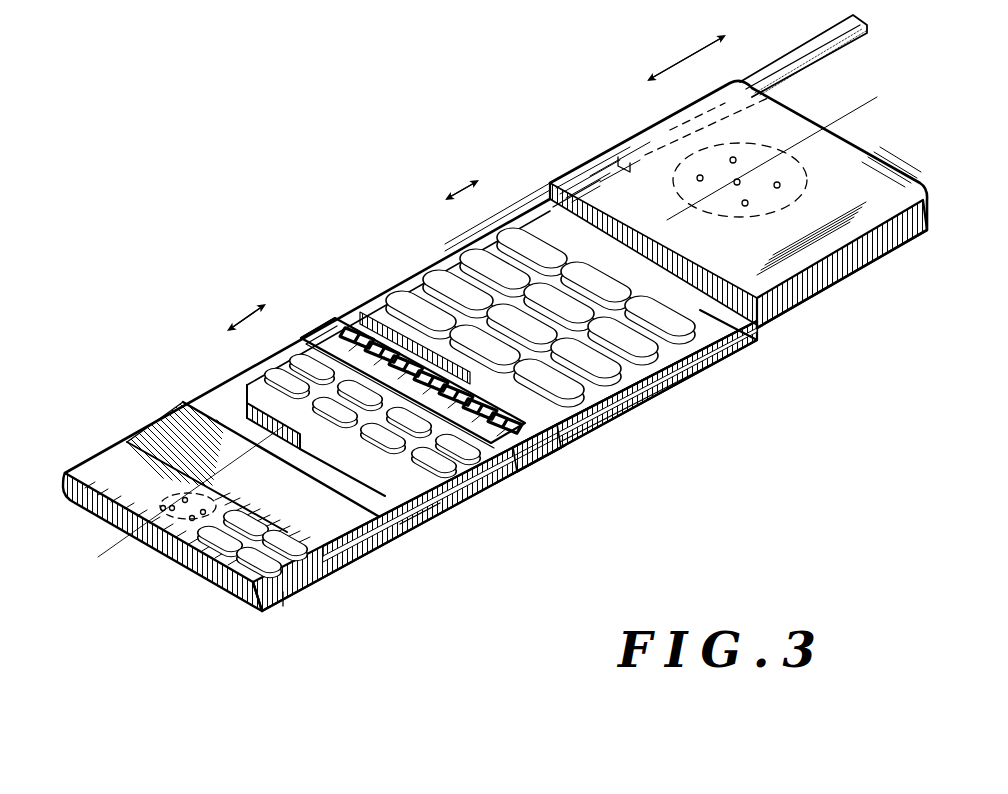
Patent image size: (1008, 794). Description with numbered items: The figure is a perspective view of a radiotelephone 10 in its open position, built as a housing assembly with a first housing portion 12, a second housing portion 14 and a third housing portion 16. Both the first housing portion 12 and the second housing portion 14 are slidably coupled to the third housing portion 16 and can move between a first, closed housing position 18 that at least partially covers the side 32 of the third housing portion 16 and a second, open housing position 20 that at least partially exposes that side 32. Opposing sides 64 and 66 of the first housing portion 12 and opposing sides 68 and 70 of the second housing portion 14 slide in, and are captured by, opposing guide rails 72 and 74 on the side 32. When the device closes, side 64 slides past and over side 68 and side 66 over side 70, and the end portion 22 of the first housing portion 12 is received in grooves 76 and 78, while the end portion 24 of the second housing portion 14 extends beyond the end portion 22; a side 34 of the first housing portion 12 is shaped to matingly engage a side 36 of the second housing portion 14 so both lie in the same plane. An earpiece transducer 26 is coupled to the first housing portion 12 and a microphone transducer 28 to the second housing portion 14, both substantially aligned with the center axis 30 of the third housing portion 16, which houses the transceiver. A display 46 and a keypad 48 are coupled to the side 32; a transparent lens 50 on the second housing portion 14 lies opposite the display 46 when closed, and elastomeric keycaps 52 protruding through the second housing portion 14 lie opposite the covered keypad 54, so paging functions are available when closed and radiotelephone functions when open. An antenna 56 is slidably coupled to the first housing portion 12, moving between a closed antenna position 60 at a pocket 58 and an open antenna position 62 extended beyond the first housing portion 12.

The radiotelephone 10 is at (680, 558).
The first housing portion 12 is at (787, 265).
The second housing portion 14 is at (64, 468).
The third housing portion 16 is at (590, 437).
The first housing position 18 is at (353, 256).
The second housing position 20 is at (350, 249).
The end portion 22 is at (487, 237).
The end portion 24 is at (340, 320).
The earpiece transducer 26 is at (747, 140).
The microphone transducer 28 is at (162, 503).
The center axis 30 is at (833, 127).
The side 32 is at (405, 285).
The side 34 is at (720, 293).
The side 36 is at (226, 424).
The display 46 is at (547, 453).
The keypad 48 is at (687, 387).
The lens 50 is at (342, 545).
The keycaps 52 is at (270, 597).
The keypad 54 is at (510, 477).
The antenna 56 is at (820, 57).
The pocket 58 is at (620, 157).
The first antenna position 60 is at (666, 68).
The second antenna position 62 is at (704, 42).
The side 64 is at (578, 195).
The side 66 is at (752, 330).
The side 68 is at (157, 413).
The side 70 is at (418, 538).
The guide rail 72 is at (363, 305).
The guide rail 74 is at (613, 418).
The groove 76 is at (137, 440).
The groove 78 is at (330, 557).